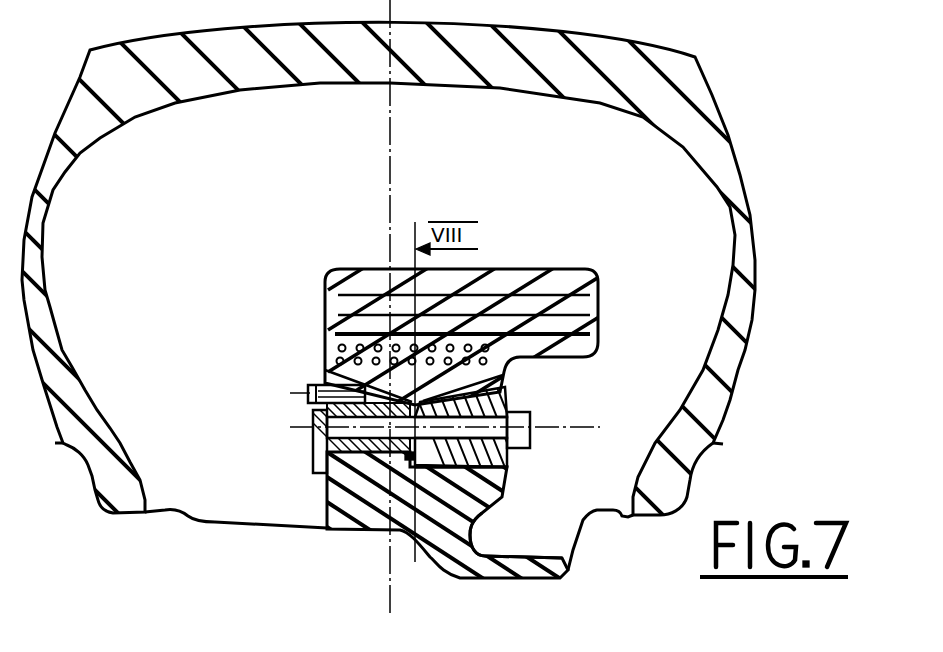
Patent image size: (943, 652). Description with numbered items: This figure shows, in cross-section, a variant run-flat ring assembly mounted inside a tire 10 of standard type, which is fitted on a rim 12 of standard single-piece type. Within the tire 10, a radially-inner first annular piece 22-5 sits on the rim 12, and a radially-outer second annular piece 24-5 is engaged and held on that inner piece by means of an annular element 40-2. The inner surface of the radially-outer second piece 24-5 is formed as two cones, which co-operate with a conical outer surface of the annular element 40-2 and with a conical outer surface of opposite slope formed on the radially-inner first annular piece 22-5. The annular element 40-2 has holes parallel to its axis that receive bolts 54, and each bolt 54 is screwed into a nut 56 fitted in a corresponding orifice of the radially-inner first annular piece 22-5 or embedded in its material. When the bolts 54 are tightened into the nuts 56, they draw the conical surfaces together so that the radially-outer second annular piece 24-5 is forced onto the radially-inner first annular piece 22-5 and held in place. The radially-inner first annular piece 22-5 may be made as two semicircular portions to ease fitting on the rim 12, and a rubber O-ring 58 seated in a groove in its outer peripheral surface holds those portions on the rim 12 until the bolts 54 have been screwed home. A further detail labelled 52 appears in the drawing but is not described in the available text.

The tire 10 is at (756, 281).
The rim 12 is at (275, 527).
The radially-inner first annular piece 22-5 is at (320, 498).
The radially-outer second annular piece 24-5 is at (323, 307).
The annular element 40-2 is at (505, 395).
The seat face 52 is at (507, 470).
The bolt 54 is at (531, 421).
The nut 56 is at (310, 413).
The rubber O-ring 58 is at (490, 522).